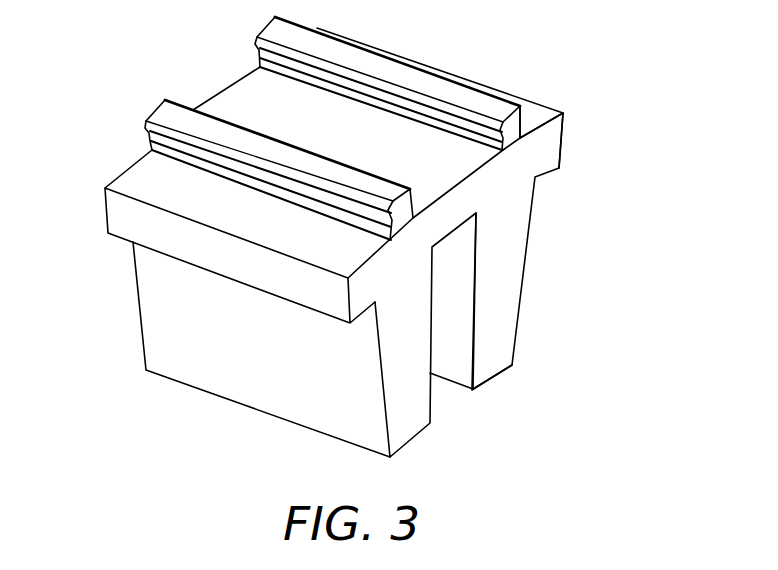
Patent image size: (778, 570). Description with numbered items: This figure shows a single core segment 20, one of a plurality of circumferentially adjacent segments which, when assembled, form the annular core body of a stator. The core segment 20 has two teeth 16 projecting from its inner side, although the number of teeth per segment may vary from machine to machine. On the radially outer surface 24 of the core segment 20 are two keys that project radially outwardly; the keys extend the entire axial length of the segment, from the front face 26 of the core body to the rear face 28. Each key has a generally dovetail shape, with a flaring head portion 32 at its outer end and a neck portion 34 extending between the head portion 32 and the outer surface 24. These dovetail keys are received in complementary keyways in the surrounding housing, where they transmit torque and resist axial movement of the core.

The teeth 16 is at (510, 298).
The core segment 20 is at (352, 228).
The radially outer surface 24 is at (230, 88).
The front face 26 is at (558, 140).
The rear face 28 is at (103, 205).
The head portion 32 is at (511, 108).
The neck portion 34 is at (528, 123).